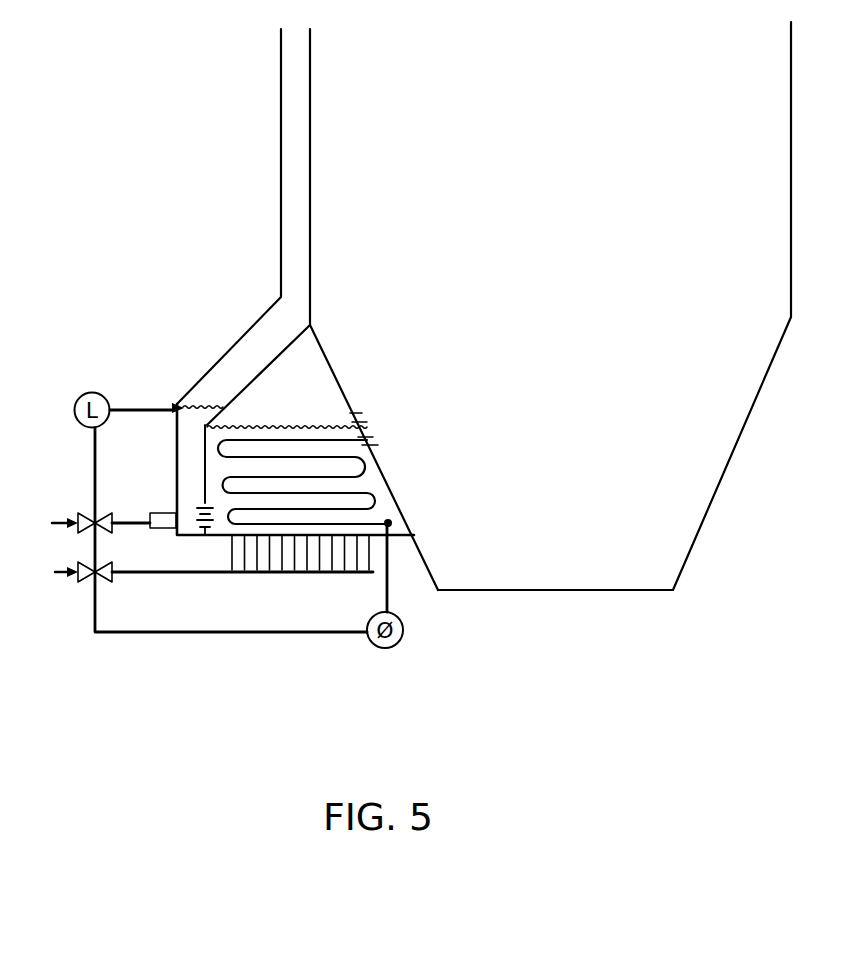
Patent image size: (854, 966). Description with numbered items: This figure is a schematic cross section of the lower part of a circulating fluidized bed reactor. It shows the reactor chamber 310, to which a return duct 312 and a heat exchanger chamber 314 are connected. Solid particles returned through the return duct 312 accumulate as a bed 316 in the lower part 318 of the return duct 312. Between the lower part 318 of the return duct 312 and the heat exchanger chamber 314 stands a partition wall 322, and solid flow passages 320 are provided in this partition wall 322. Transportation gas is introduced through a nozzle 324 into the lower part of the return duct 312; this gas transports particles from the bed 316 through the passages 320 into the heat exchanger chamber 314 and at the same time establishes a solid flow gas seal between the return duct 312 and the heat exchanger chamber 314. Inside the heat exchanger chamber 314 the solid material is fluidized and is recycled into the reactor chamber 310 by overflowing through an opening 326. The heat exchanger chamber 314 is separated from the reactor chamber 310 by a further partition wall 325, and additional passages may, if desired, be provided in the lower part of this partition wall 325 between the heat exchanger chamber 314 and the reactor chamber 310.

The reactor chamber 310 is at (593, 298).
The return duct 312 is at (300, 162).
The heat exchanger chamber 314 is at (318, 397).
The bed of solid particles 316 is at (188, 457).
The lower part of the return duct 318 is at (222, 384).
The solid flow passages 320 is at (222, 518).
The partition wall 322 is at (203, 435).
The nozzle 324 is at (168, 532).
The partition wall 325 is at (403, 513).
The opening 326 is at (370, 430).